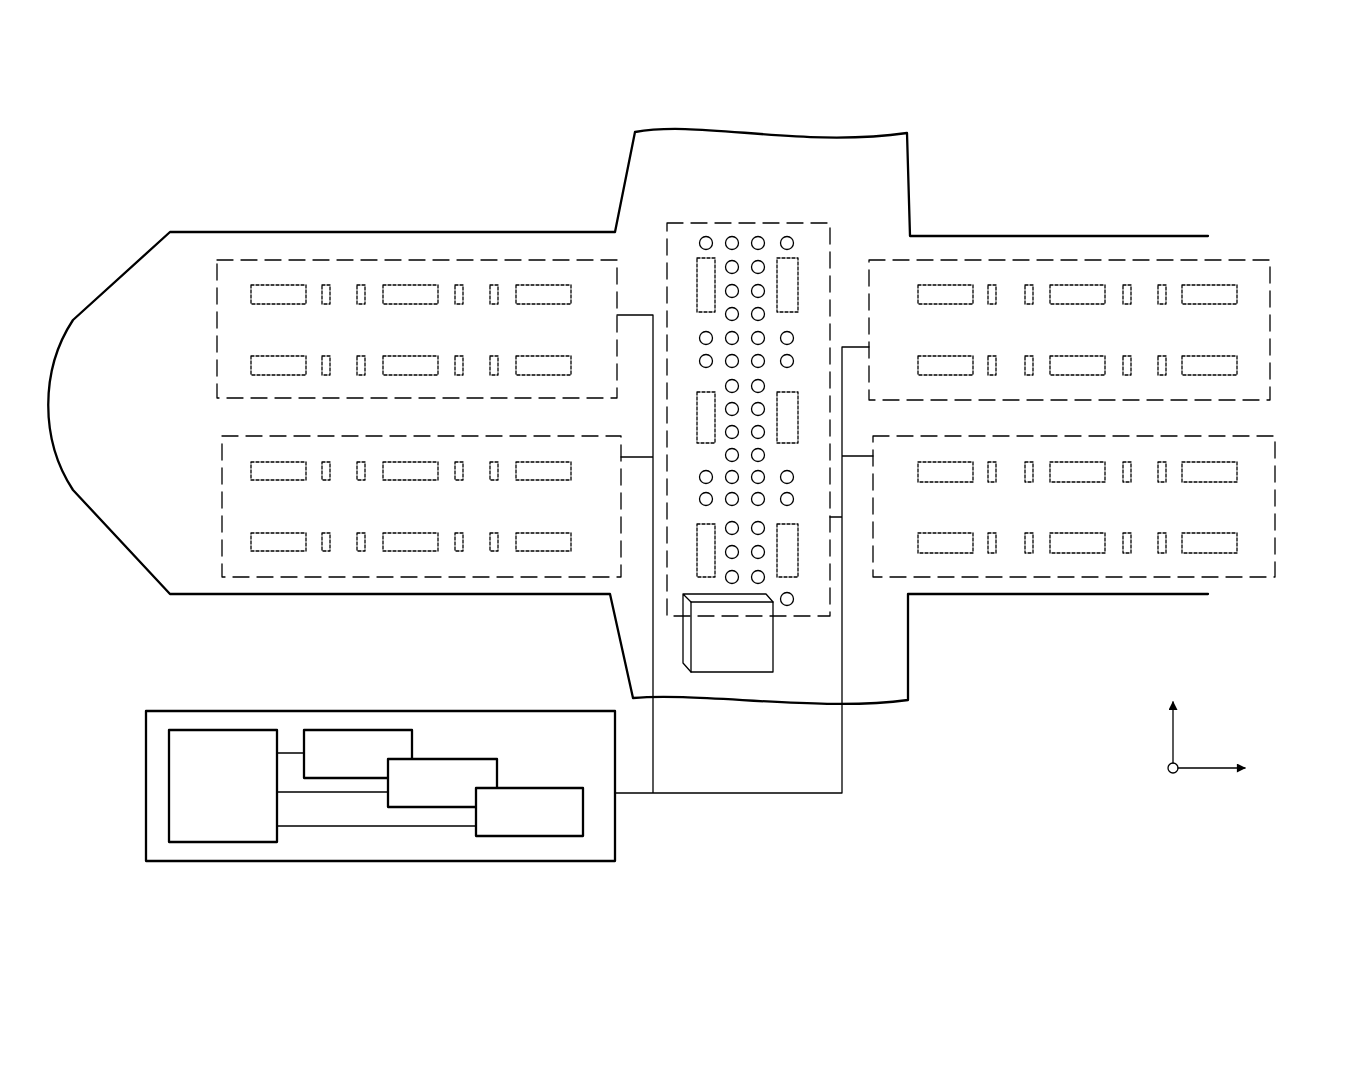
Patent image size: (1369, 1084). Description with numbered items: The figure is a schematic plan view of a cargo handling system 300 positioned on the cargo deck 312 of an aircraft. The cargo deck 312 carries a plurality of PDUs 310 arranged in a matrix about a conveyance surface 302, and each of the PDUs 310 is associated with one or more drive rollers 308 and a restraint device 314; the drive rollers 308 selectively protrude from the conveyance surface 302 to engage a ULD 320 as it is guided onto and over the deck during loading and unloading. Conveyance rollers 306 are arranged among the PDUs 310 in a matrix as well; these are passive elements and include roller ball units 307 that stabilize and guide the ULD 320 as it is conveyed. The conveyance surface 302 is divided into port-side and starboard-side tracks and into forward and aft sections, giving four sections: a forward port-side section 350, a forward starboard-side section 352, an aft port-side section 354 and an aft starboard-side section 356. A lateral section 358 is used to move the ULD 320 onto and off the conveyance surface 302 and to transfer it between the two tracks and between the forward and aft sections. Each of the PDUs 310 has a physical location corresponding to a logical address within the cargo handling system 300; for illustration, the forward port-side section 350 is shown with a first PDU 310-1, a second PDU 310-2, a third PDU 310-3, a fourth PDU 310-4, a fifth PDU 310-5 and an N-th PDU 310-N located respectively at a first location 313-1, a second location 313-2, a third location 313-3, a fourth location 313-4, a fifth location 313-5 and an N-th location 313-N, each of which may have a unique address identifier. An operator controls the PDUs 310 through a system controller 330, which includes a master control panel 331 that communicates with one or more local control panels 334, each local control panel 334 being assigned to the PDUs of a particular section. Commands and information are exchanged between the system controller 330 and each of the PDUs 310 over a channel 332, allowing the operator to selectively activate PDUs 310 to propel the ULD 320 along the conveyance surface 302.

The cargo handling system 300 is at (190, 139).
The conveyance surface 302 is at (926, 346).
The conveyance rollers 306 is at (1162, 290).
The roller ball units 307 is at (787, 238).
The drive rollers 308 is at (563, 290).
The PDUs 310 is at (332, 236).
The first PDU 310-1 is at (264, 462).
The second PDU 310-2 is at (397, 462).
The third PDU 310-3 is at (520, 462).
The fourth PDU 310-4 is at (298, 552).
The fifth PDU 310-5 is at (432, 552).
The N-th PDU 310-N is at (552, 552).
The cargo deck 312 is at (477, 293).
The first location 313-1 is at (314, 486).
The second location 313-2 is at (449, 486).
The third location 313-3 is at (557, 459).
The fourth location 313-4 is at (314, 556).
The fifth location 313-5 is at (449, 556).
The N-th location 313-N is at (574, 531).
The restraint device 314 is at (548, 268).
The ULD 320 is at (710, 664).
The system controller 330 is at (341, 810).
The master control panel 331 is at (237, 843).
The channel 332 is at (806, 795).
The local control panels 334 is at (412, 752).
The forward port-side section 350 is at (386, 534).
The forward starboard-side section 352 is at (621, 274).
The aft port-side section 354 is at (1277, 553).
The aft starboard-side section 356 is at (1109, 281).
The lateral section 358 is at (743, 387).